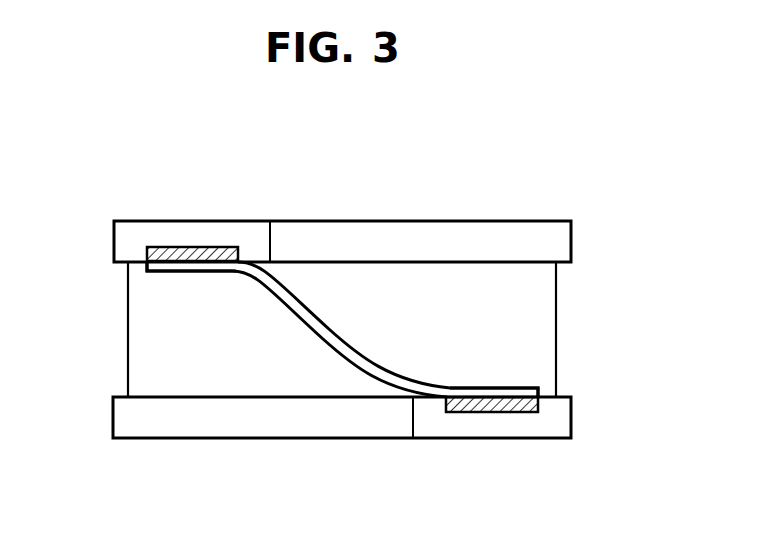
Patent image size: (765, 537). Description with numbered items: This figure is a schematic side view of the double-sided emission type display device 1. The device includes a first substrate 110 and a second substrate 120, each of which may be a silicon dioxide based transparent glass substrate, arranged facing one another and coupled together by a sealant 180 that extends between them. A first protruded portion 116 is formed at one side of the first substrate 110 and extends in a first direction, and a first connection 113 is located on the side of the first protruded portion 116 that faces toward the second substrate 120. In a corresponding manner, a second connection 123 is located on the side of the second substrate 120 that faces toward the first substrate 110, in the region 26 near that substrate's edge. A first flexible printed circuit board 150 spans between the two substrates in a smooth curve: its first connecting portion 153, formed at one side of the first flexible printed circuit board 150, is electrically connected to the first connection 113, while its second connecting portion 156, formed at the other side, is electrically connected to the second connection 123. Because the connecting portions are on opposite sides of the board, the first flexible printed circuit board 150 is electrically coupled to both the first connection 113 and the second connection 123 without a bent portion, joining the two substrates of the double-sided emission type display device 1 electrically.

The double-sided emission type display device 1 is at (528, 194).
The upper display panel region 26 is at (118, 241).
The first substrate 110 is at (118, 418).
The first connection 113 is at (490, 408).
The first protruded portion 116 is at (564, 418).
The second substrate 120 is at (571, 242).
The second connection 123 is at (178, 250).
The first flexible printed circuit board 150 is at (352, 352).
The first connecting portion 153 is at (515, 395).
The second connecting portion 156 is at (167, 270).
The sealant 180 is at (550, 310).